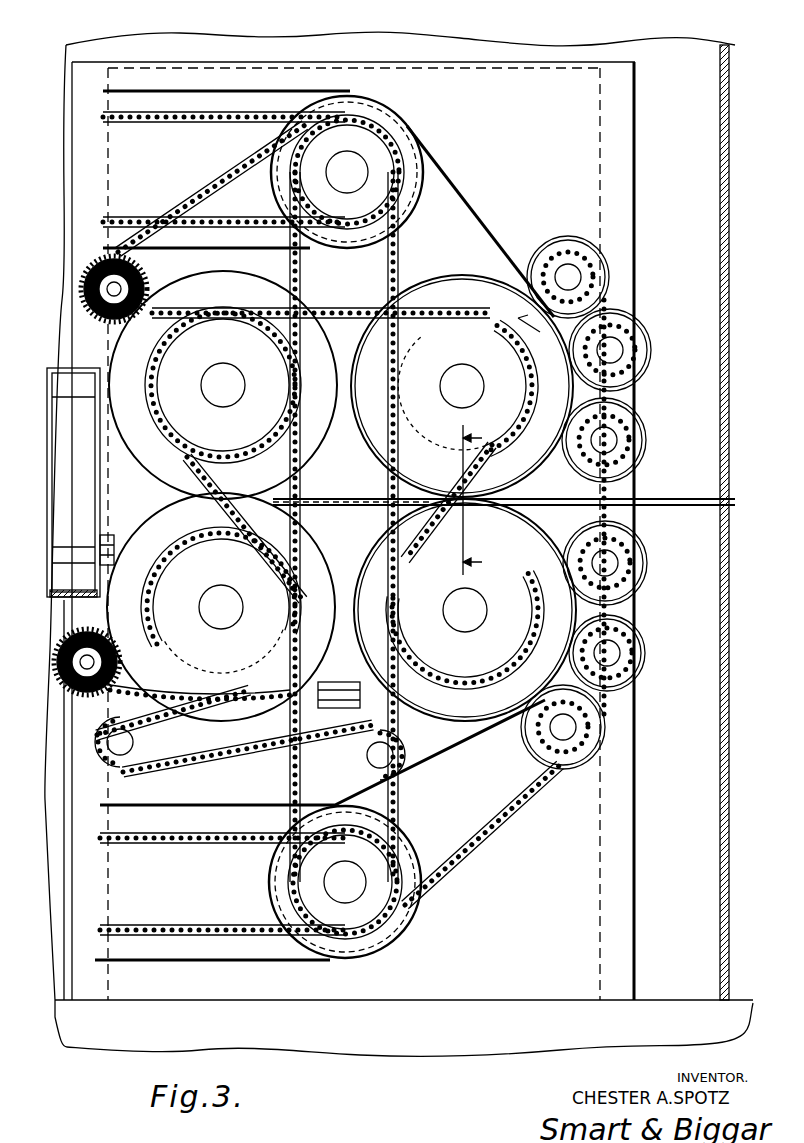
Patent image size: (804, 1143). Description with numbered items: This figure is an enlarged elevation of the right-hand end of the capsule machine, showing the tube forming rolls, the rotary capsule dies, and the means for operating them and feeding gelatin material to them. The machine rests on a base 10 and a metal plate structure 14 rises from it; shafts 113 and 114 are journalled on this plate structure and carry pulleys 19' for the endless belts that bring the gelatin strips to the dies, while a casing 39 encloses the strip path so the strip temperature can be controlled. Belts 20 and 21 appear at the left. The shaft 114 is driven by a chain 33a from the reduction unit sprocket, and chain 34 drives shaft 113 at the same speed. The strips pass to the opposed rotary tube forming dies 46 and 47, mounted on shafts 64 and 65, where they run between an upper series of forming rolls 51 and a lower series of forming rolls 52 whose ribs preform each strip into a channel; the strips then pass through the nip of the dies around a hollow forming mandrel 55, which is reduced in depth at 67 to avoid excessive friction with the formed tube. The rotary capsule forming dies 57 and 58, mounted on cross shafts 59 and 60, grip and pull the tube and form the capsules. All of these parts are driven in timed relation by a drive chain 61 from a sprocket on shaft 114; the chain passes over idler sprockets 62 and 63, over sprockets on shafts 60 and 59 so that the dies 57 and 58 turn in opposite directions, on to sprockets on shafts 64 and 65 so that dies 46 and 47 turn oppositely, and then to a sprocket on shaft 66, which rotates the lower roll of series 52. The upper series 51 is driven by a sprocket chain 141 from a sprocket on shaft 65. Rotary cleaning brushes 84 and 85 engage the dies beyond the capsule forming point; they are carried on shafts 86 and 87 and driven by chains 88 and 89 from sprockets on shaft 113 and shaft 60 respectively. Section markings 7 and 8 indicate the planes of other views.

The section line 7 is at (534, 332).
The section line 8 is at (483, 500).
The base 10 is at (375, 1045).
The metal plate structure 14 is at (613, 118).
The pulleys 19' is at (412, 534).
The endless belt 20 is at (205, 960).
The endless belt 21 is at (247, 92).
The chain 33a is at (172, 843).
The chain 34 is at (395, 258).
The casing 39 is at (733, 68).
The rotary tube forming die 46 is at (548, 455).
The rotary tube forming die 47 is at (532, 550).
The forming rolls 51 is at (606, 316).
The forming rolls 52 is at (652, 612).
The hollow forming mandrel 55 is at (688, 500).
The rotary forming die 57 is at (312, 362).
The rotary forming die 58 is at (315, 580).
The cross shaft 59 is at (223, 378).
The cross shaft 60 is at (221, 600).
The drive chain 61 is at (432, 312).
The idler sprocket 62 is at (362, 756).
The idler sprocket 63 is at (142, 750).
The shaft 64 is at (463, 381).
The shaft 65 is at (446, 613).
The shaft 66 is at (568, 765).
The reduced portion of mandrel 67 is at (335, 492).
The rotary cleaning brush 84 is at (97, 282).
The rotary cleaning brush 85 is at (85, 668).
The brush shaft 86 is at (100, 295).
The brush shaft 87 is at (80, 657).
The chain 88 is at (218, 186).
The chain 89 is at (153, 565).
The shaft 113 is at (352, 170).
The shaft 114 is at (350, 880).
The sprocket chain 141 is at (640, 478).